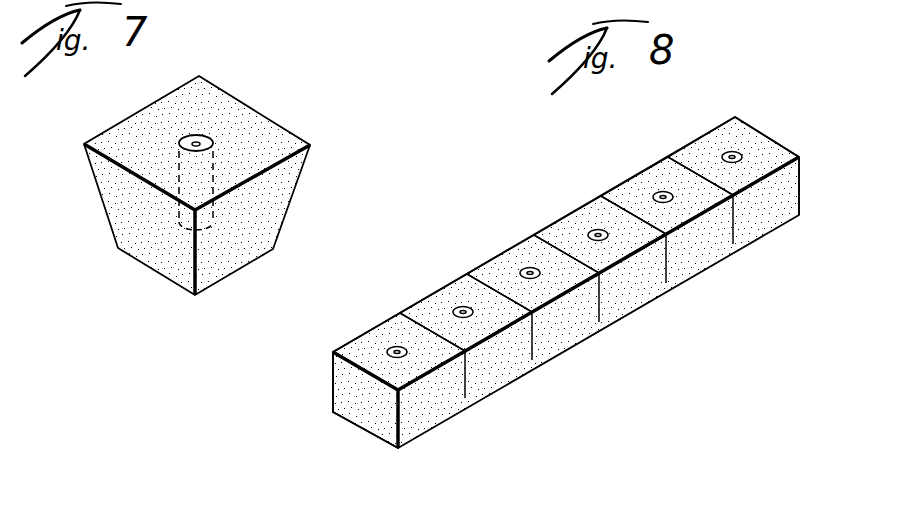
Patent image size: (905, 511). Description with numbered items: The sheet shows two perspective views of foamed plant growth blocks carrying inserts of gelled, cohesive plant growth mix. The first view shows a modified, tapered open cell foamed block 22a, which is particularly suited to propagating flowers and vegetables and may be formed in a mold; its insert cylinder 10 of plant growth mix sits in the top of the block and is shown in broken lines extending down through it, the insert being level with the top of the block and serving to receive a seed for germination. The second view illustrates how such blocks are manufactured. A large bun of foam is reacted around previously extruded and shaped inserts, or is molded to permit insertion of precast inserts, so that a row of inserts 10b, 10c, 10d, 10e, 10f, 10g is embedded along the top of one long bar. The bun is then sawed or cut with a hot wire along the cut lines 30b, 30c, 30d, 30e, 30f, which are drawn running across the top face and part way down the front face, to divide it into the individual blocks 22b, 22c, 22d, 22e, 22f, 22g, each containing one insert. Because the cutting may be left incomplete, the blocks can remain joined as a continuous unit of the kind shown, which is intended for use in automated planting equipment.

In FIG. 7, the insert cylinder 10 is at (207, 140).
In FIG. 7, the tapered foamed block 22a is at (276, 200).
In FIG. 8, the insert 10b is at (392, 346).
In FIG. 8, the insert 10c is at (459, 306).
In FIG. 8, the insert 10d is at (527, 267).
In FIG. 8, the insert 10e is at (595, 229).
In FIG. 8, the insert 10f is at (659, 191).
In FIG. 8, the insert 10g is at (728, 151).
In FIG. 8, the block 22b is at (417, 432).
In FIG. 8, the block 22c is at (485, 395).
In FIG. 8, the block 22d is at (550, 357).
In FIG. 8, the block 22e is at (615, 312).
In FIG. 8, the block 22f is at (682, 275).
In FIG. 8, the block 22g is at (757, 223).
In FIG. 8, the cut line 30b is at (464, 396).
In FIG. 8, the cut line 30c is at (531, 358).
In FIG. 8, the cut line 30d is at (598, 320).
In FIG. 8, the cut line 30e is at (664, 281).
In FIG. 8, the cut line 30f is at (732, 242).